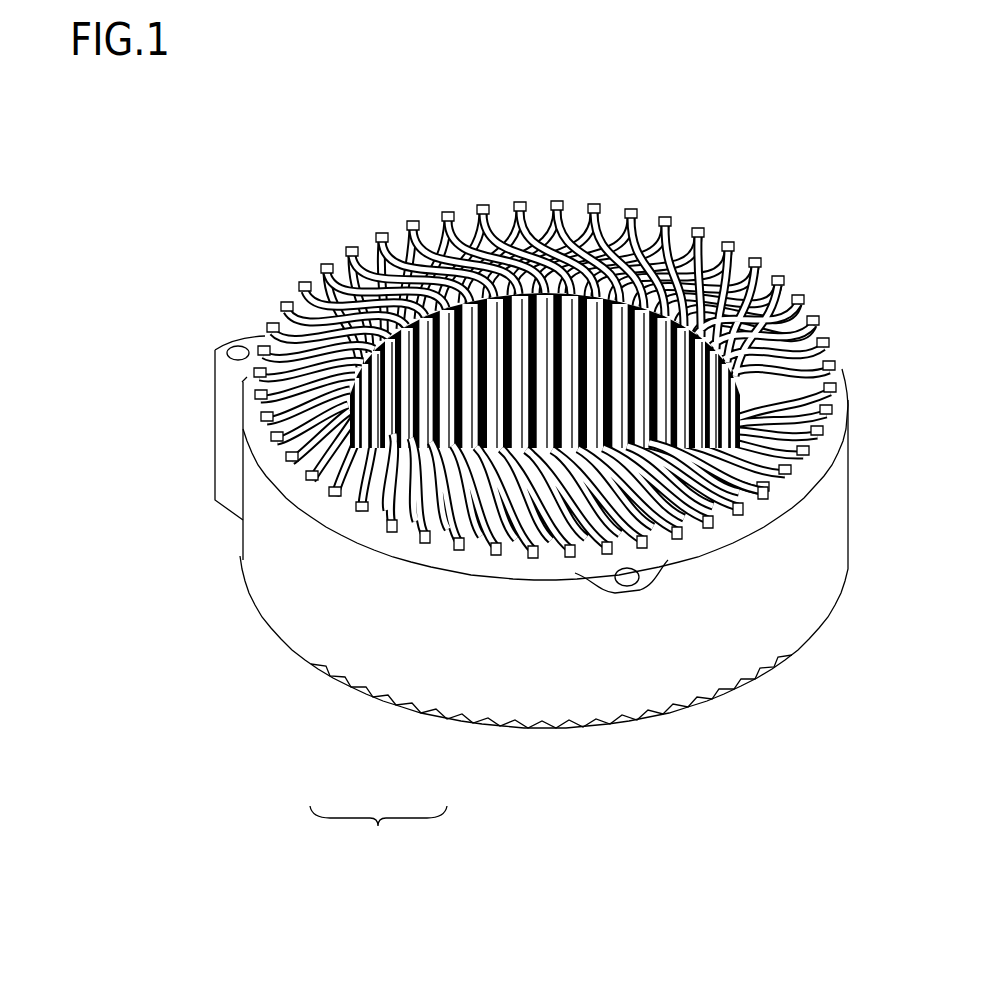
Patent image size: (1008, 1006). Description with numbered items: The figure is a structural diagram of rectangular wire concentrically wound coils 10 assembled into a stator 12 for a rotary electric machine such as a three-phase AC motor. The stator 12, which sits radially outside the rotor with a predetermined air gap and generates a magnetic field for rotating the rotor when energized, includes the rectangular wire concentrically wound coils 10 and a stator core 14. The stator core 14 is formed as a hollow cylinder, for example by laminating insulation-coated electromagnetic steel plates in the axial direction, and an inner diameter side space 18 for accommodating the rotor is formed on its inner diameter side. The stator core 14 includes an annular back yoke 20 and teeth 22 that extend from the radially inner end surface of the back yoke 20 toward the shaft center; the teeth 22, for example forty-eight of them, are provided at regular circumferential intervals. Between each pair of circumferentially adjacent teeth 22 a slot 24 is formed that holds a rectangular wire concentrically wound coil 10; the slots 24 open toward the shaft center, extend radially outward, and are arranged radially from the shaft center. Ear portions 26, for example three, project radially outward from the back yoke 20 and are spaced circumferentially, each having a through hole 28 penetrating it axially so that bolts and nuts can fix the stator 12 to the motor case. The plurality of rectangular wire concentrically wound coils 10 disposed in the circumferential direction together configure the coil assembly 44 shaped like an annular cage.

The rectangular wire concentrically wound coil 10 is at (634, 207).
The stator 12 is at (812, 240).
The stator core 14 is at (378, 834).
The inner diameter side space 18 is at (557, 470).
The back yoke 20 is at (457, 553).
The teeth 22 is at (483, 540).
The slot 24 is at (413, 523).
The ear portion 26 is at (650, 568).
The through hole 28 is at (642, 585).
The coil assembly 44 is at (462, 200).